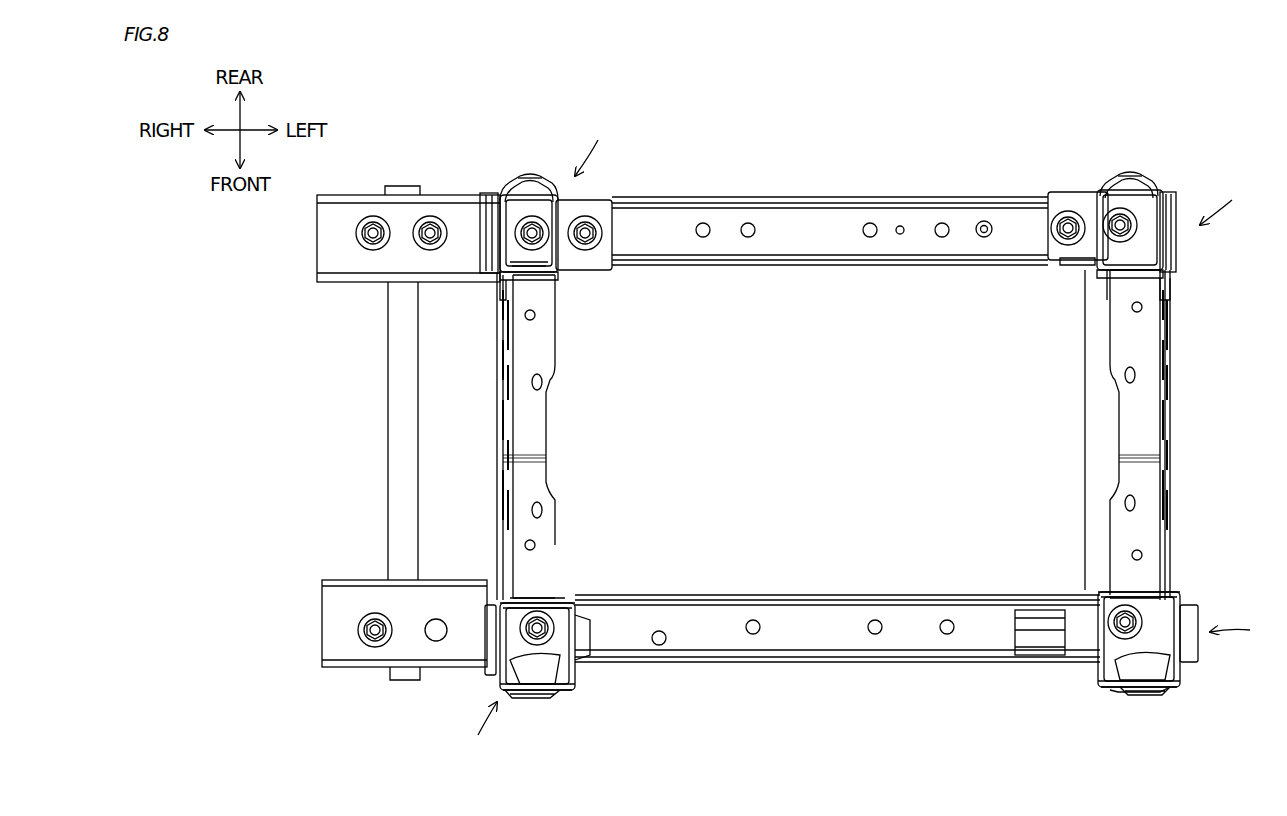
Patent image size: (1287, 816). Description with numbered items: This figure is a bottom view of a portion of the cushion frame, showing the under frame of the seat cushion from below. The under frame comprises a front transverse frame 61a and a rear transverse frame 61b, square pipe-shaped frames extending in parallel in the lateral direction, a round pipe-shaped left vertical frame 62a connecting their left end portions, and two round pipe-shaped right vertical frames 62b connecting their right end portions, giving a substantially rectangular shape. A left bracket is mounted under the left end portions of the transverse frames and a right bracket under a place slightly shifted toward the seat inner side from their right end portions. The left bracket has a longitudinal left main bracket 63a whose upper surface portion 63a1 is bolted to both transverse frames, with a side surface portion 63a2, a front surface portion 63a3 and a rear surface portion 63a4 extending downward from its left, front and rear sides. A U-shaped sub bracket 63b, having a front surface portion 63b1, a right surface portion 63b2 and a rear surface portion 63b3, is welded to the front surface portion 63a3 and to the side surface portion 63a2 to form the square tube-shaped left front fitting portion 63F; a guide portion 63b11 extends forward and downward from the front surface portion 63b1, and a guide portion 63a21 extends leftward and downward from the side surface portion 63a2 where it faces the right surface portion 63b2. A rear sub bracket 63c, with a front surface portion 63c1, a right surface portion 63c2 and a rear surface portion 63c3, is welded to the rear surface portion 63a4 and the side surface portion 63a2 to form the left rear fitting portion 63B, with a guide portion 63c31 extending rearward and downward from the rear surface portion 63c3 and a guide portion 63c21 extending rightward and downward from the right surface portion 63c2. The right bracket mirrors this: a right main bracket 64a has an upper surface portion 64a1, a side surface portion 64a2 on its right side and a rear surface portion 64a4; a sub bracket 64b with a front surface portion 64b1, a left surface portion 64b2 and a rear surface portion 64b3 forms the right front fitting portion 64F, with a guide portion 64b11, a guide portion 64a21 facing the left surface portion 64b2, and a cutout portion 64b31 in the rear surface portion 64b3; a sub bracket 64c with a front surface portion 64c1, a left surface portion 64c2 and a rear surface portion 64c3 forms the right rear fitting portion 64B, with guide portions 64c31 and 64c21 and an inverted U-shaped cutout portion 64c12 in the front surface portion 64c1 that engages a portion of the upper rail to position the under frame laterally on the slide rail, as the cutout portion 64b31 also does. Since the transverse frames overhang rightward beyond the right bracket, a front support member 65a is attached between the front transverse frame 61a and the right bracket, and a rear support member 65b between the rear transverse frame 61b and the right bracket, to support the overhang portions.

The front transverse frame 61a is at (815, 662).
The rear transverse frame 61b is at (812, 197).
The left vertical frame 62a is at (1085, 430).
The right vertical frames 62b is at (388, 432).
The left main bracket 63a is at (1175, 450).
The upper surface portion 63a1 is at (1145, 478).
The side surface portion 63a2 is at (1168, 370).
The guide portion 63a21 is at (1185, 612).
The front surface portion 63a3 is at (1118, 692).
The rear surface portion 63a4 is at (1165, 192).
The sub bracket 63b is at (1138, 654).
The front surface portion 63b1 is at (1150, 665).
The guide portion 63b11 is at (1145, 695).
The right surface portion 63b2 is at (1062, 632).
The rear surface portion 63b3 is at (1110, 600).
The sub bracket 63c is at (1109, 223).
The front surface portion 63c1 is at (1170, 295).
The right surface portion 63c2 is at (1100, 260).
The guide portion 63c21 is at (1075, 245).
The rear surface portion 63c3 is at (1120, 182).
The guide portion 63c31 is at (1133, 174).
The left rear joint 63B is at (1231, 205).
The left front fitting portion 63F is at (1245, 628).
The right main bracket 64a is at (510, 429).
The upper surface portion 64a1 is at (530, 440).
The side surface portion 64a2 is at (497, 392).
The guide portion 64a21 is at (487, 668).
The rear surface portion 64a4 is at (490, 195).
The sub bracket 64b is at (578, 653).
The front surface portion 64b1 is at (560, 690).
The guide portion 64b11 is at (525, 700).
The left surface portion 64b2 is at (590, 632).
The rear surface portion 64b3 is at (560, 603).
The cutout portion 64b31 is at (550, 600).
The sub bracket 64c is at (580, 225).
The front surface portion 64c1 is at (540, 275).
The cutout portion 64c12 is at (545, 282).
The left surface portion 64c2 is at (560, 222).
The guide portion 64c21 is at (560, 274).
The rear surface portion 64c3 is at (540, 180).
The guide portion 64c31 is at (530, 176).
The right rear joint 64B is at (600, 145).
The right front fitting portion 64F is at (469, 727).
The front support member 65a is at (322, 628).
The rear support member 65b is at (317, 240).